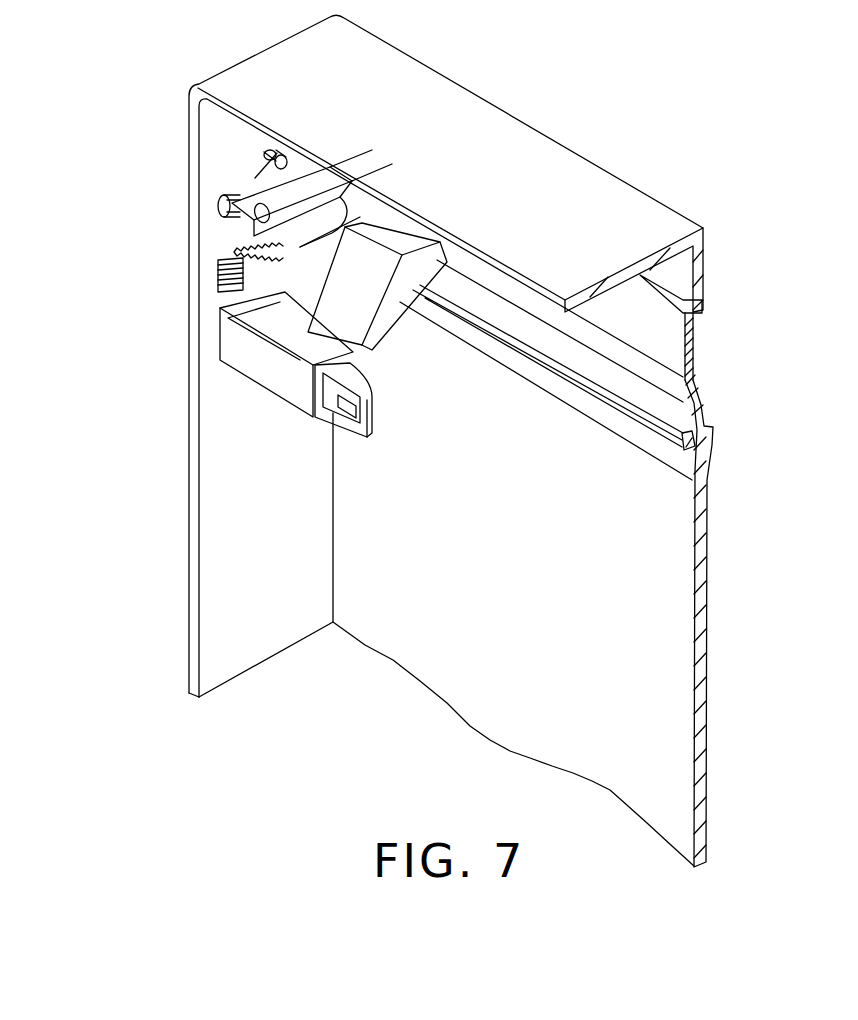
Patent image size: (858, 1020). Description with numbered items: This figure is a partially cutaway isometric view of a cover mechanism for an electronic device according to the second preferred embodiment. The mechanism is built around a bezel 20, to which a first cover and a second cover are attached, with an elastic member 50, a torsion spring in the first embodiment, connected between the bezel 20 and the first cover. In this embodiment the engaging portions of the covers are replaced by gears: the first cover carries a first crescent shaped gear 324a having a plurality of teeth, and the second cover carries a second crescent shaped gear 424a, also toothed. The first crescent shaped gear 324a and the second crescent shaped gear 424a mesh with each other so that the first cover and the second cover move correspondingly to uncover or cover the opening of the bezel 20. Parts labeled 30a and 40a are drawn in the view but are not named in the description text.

The bezel 20 is at (472, 148).
The first plate 30a is at (667, 337).
The second plate 40a is at (683, 407).
The elastic member 50 is at (262, 277).
The first crescent shaped gear 324a is at (242, 248).
The second crescent shaped gear 424a is at (217, 293).